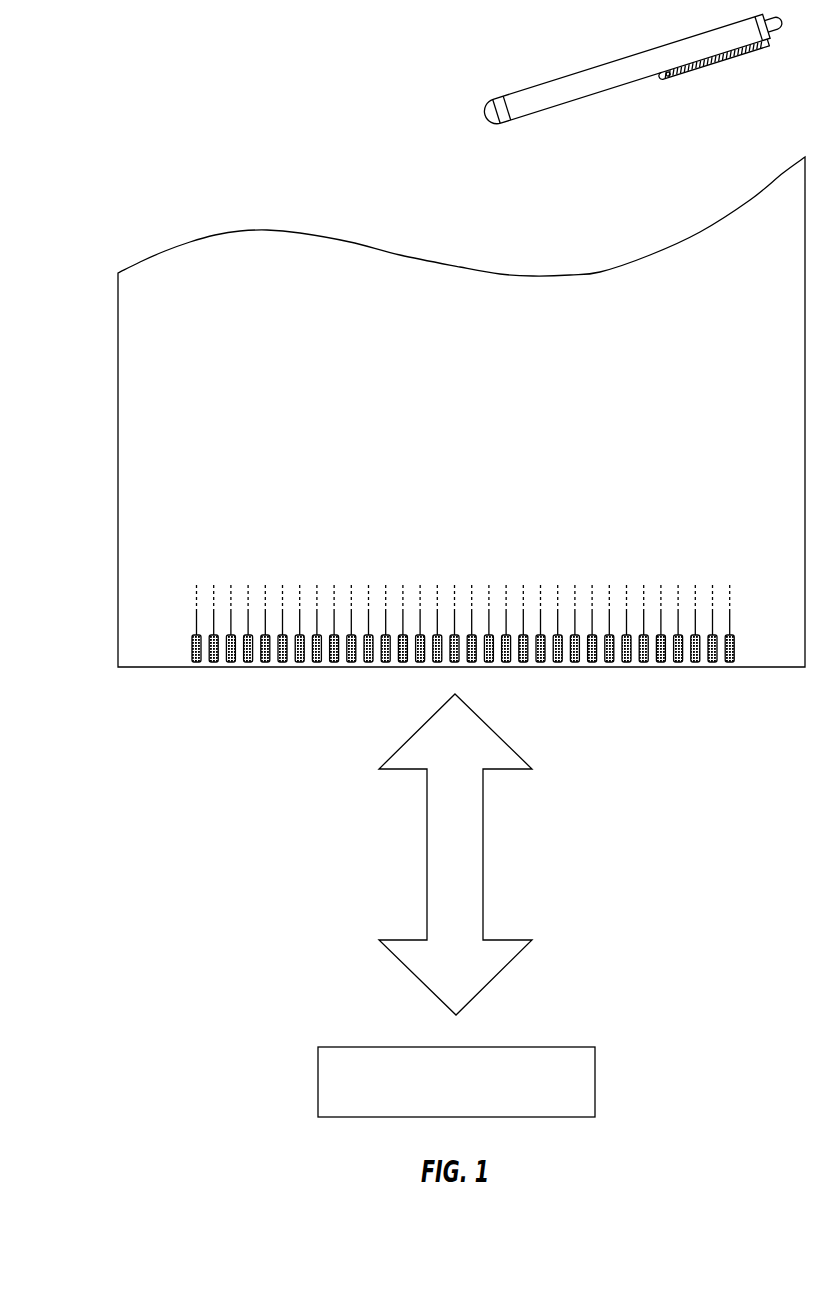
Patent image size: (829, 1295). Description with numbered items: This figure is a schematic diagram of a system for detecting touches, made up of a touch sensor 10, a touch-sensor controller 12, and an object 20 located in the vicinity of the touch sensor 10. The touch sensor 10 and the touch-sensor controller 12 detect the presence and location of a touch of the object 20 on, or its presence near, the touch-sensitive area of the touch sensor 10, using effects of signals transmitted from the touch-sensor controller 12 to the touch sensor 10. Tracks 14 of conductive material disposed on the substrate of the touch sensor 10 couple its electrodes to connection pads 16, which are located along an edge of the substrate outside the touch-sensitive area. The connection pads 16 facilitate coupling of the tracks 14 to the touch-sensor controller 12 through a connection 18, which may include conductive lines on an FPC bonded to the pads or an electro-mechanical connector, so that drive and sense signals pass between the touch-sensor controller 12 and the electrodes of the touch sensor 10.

The touch sensor 10 is at (147, 420).
The touch-sensor controller 12 is at (313, 1083).
The tracks 14 is at (191, 625).
The connection pads 16 is at (190, 648).
The connection 18 is at (425, 855).
The object 20 is at (598, 64).